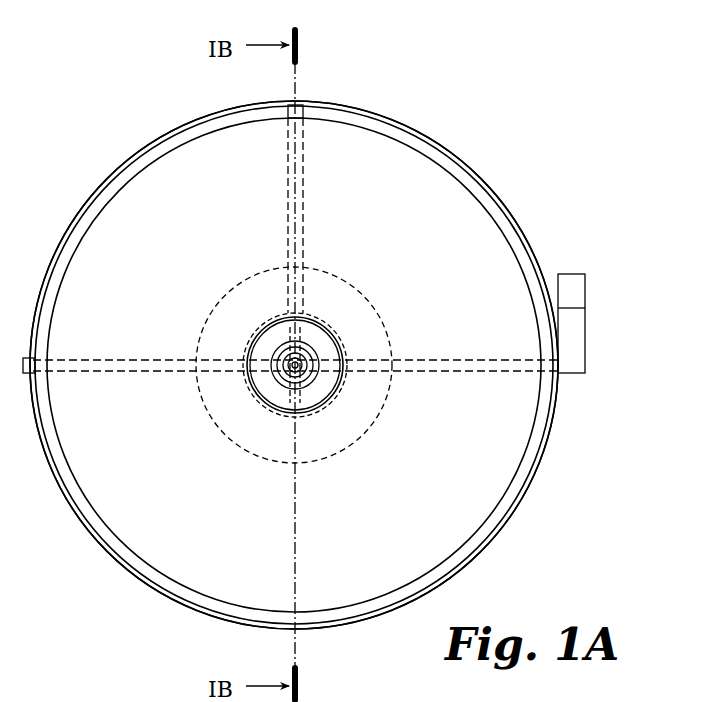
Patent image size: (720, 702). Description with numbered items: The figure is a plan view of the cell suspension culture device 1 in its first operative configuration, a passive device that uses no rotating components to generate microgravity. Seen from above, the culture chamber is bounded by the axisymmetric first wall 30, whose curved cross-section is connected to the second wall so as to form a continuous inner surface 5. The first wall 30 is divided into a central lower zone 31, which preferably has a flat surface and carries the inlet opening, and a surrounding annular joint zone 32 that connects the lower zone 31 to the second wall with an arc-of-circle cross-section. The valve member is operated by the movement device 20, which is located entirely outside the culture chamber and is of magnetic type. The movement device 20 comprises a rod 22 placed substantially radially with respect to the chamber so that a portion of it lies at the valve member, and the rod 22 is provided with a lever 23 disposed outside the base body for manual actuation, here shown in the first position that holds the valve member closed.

The cell suspension culture device 1 is at (451, 99).
The continuous inner surface 5 is at (430, 216).
The movement device 20 is at (268, 384).
The rod 22 is at (505, 365).
The lever 23 is at (575, 344).
The first wall 30 is at (480, 483).
The lower zone 31 is at (330, 435).
The joint zone 32 is at (138, 512).